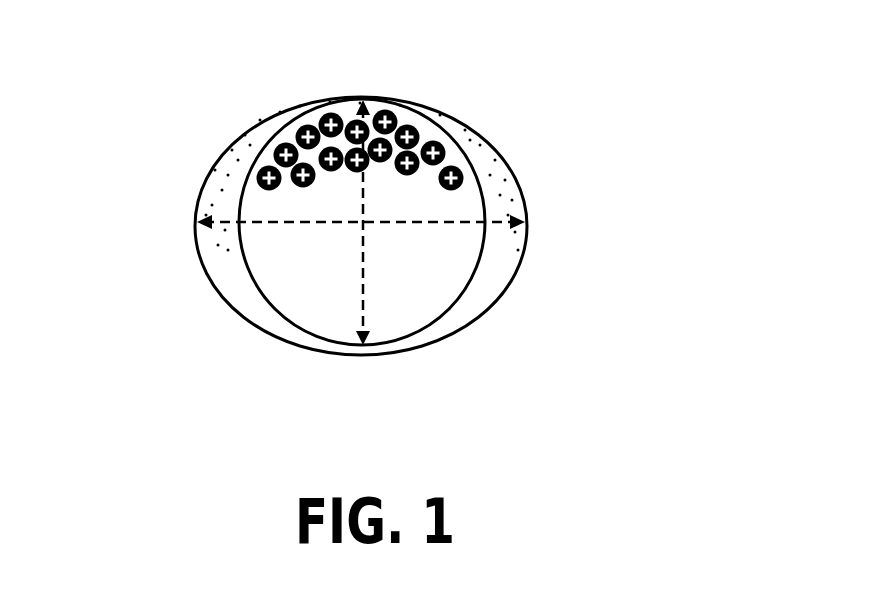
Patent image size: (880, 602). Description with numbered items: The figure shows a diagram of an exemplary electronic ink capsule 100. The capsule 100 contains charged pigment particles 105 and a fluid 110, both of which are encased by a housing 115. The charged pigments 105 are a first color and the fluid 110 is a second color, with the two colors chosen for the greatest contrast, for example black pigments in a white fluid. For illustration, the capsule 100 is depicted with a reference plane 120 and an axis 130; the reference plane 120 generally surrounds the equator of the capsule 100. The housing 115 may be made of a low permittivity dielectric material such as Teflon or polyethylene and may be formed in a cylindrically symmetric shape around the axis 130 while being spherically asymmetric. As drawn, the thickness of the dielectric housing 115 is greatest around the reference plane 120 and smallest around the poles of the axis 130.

The electronic ink capsule 100 is at (203, 165).
The charged pigment particles 105 is at (453, 65).
The fluid 110 is at (287, 265).
The housing 115 is at (478, 297).
The reference plane 120 is at (498, 200).
The axis 130 is at (370, 350).